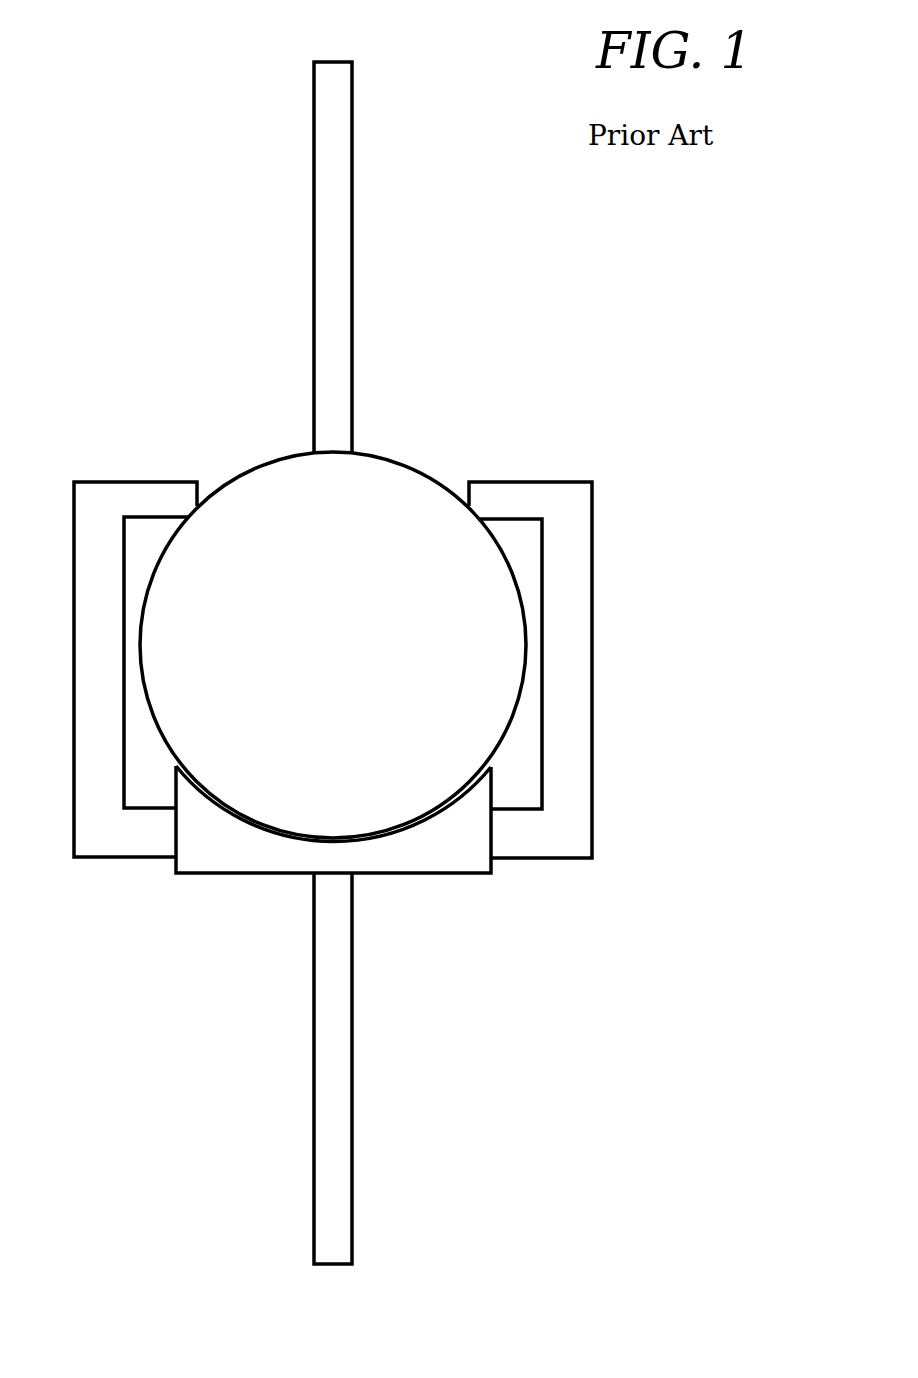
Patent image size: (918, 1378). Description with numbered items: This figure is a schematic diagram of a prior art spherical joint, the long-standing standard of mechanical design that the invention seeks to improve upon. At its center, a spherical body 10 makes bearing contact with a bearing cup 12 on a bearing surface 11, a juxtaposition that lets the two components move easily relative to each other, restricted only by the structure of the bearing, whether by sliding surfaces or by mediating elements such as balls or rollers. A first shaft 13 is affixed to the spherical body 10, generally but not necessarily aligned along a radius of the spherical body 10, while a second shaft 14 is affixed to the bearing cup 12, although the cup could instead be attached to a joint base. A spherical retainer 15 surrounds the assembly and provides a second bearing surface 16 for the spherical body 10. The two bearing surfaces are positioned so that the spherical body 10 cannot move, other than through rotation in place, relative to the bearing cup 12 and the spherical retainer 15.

The spherical body 10 is at (331, 657).
The bearing surface 11 is at (420, 820).
The bearing cup 12 is at (474, 857).
The first shaft 13 is at (348, 168).
The second shaft 14 is at (352, 1207).
The spherical retainer 15 is at (588, 500).
The second bearing surface 16 is at (470, 490).